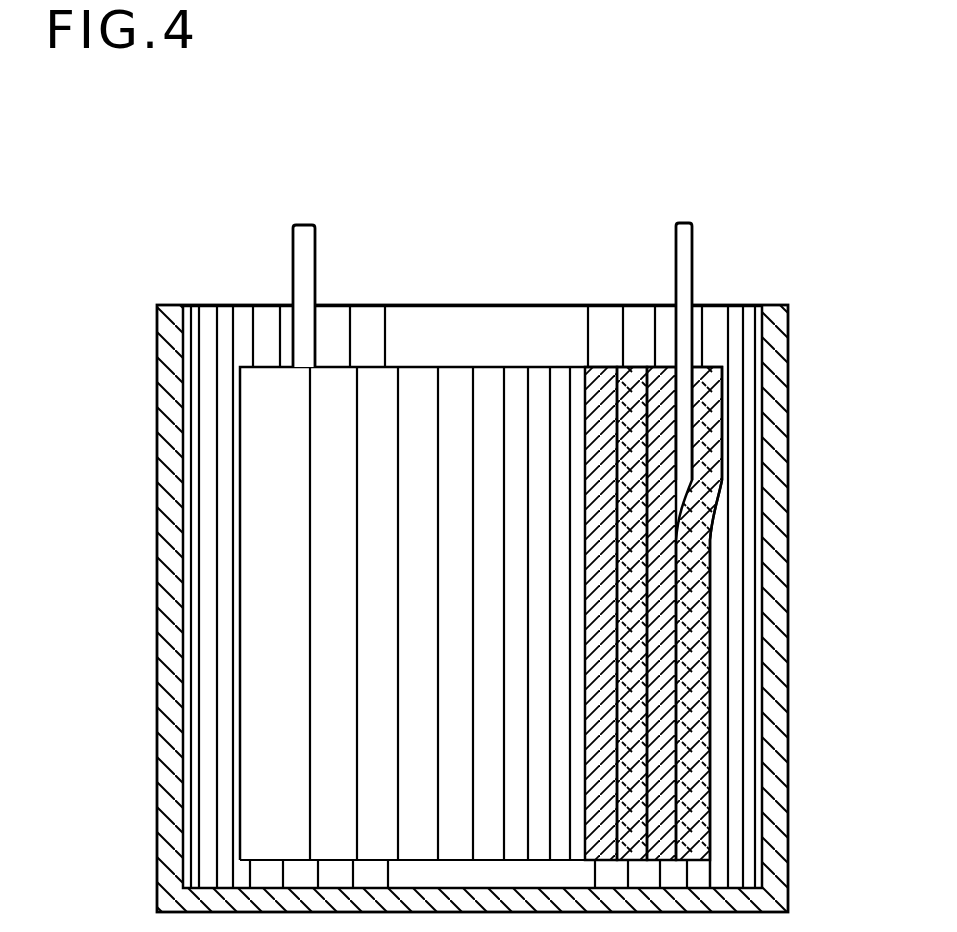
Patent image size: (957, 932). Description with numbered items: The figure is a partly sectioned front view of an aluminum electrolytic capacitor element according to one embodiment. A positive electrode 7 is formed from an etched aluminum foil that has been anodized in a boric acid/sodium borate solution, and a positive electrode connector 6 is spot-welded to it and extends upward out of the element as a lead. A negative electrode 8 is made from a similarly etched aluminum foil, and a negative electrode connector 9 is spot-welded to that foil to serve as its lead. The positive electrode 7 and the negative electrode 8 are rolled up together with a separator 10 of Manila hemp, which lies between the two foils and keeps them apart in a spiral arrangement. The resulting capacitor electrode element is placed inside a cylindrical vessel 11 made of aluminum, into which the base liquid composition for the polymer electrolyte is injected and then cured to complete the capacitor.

The positive electrode connector 6 is at (676, 237).
The positive electrode 7 is at (660, 432).
The negative electrode 8 is at (600, 565).
The negative electrode connector 9 is at (315, 232).
The separator 10 is at (643, 640).
The cylindrical vessel 11 is at (786, 725).